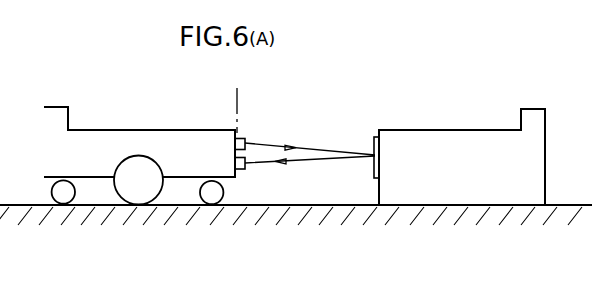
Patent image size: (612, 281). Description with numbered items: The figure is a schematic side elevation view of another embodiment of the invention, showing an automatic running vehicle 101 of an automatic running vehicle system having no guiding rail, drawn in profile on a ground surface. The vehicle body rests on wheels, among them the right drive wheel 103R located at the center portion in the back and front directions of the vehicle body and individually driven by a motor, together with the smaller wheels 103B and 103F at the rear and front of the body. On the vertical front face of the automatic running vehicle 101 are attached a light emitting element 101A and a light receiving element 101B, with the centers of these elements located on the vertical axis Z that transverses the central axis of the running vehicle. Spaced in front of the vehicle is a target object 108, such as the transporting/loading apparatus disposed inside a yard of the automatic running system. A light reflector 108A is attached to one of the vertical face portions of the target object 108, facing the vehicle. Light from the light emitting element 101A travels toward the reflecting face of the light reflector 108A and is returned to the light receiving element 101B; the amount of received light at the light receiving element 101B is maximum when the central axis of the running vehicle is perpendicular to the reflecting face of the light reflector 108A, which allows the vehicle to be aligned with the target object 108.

The automatic running vehicle 101 is at (144, 130).
The light emitting element 101A is at (240, 135).
The light receiving element 101B is at (246, 169).
The rear wheel 103B is at (63, 201).
The right drive wheel 103R is at (140, 201).
The front wheel 103F is at (213, 201).
The target object 108 is at (461, 130).
The light reflector 108A is at (374, 179).
The vertical axis Z is at (237, 99).